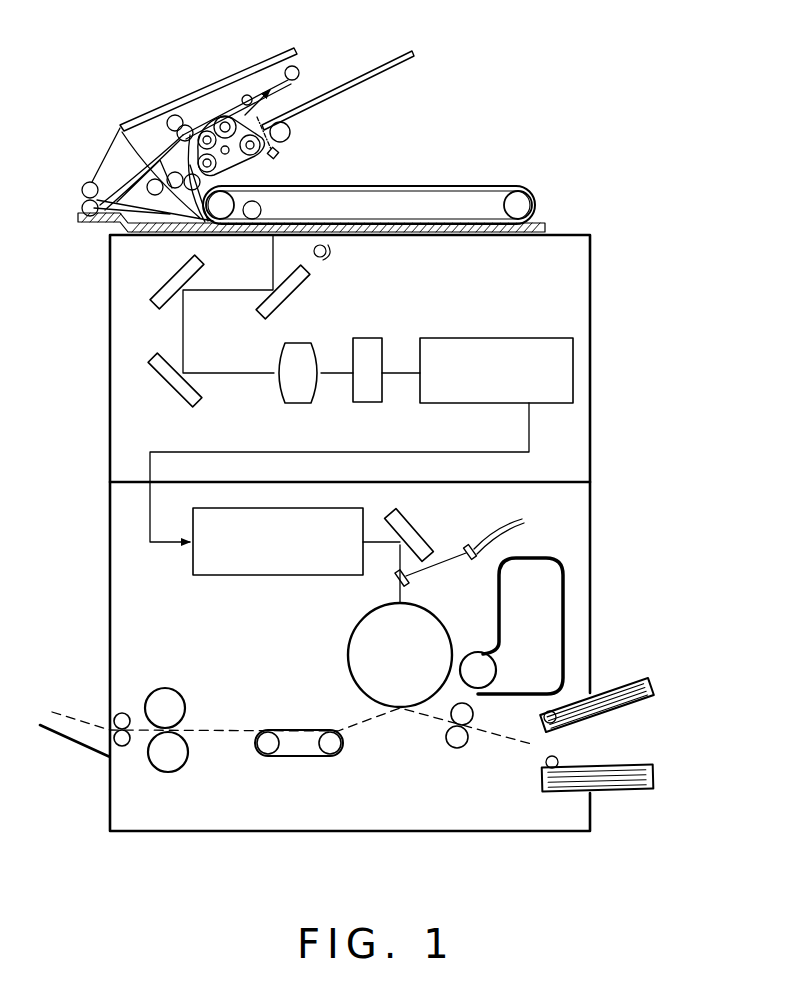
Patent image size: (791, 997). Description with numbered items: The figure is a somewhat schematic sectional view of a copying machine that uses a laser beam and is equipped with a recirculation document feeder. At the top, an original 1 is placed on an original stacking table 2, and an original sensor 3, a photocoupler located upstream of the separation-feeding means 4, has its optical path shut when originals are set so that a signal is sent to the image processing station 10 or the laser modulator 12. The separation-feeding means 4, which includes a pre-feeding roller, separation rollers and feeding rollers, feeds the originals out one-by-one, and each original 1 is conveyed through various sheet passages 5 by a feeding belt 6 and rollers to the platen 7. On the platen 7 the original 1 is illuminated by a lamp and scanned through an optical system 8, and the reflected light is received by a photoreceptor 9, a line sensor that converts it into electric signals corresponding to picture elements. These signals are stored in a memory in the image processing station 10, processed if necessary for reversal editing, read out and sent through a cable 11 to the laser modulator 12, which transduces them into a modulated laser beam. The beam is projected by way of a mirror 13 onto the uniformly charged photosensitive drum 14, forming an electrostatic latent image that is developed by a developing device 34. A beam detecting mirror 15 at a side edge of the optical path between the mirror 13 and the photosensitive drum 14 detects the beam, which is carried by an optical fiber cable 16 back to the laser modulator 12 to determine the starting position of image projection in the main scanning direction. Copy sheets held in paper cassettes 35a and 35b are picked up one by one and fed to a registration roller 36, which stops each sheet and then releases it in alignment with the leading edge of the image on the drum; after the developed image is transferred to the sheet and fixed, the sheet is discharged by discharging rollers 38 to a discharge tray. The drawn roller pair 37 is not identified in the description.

The original 1 is at (330, 87).
The original stacking table 2 is at (388, 60).
The original sensor 3 is at (278, 147).
The separation-feeding means 4 is at (253, 163).
The sheet passages 5 is at (140, 163).
The feeding belt 6 is at (420, 190).
The platen 7 is at (506, 232).
The optical system 8 is at (300, 337).
The photoreceptor 9 is at (370, 337).
The image processing station 10 is at (535, 337).
The cable 11 is at (300, 452).
The laser modulator 12 is at (225, 576).
The mirror 13 is at (410, 519).
The photosensitive drum 14 is at (360, 628).
The beam detecting mirror 15 is at (410, 578).
The optical fiber cable 16 is at (511, 522).
The developing device 34 is at (564, 588).
The paper cassette 35a is at (618, 687).
The paper cassette 35b is at (627, 763).
The registration roller 36 is at (460, 749).
The fixing rollers 37 is at (186, 702).
The discharging rollers 38 is at (126, 714).